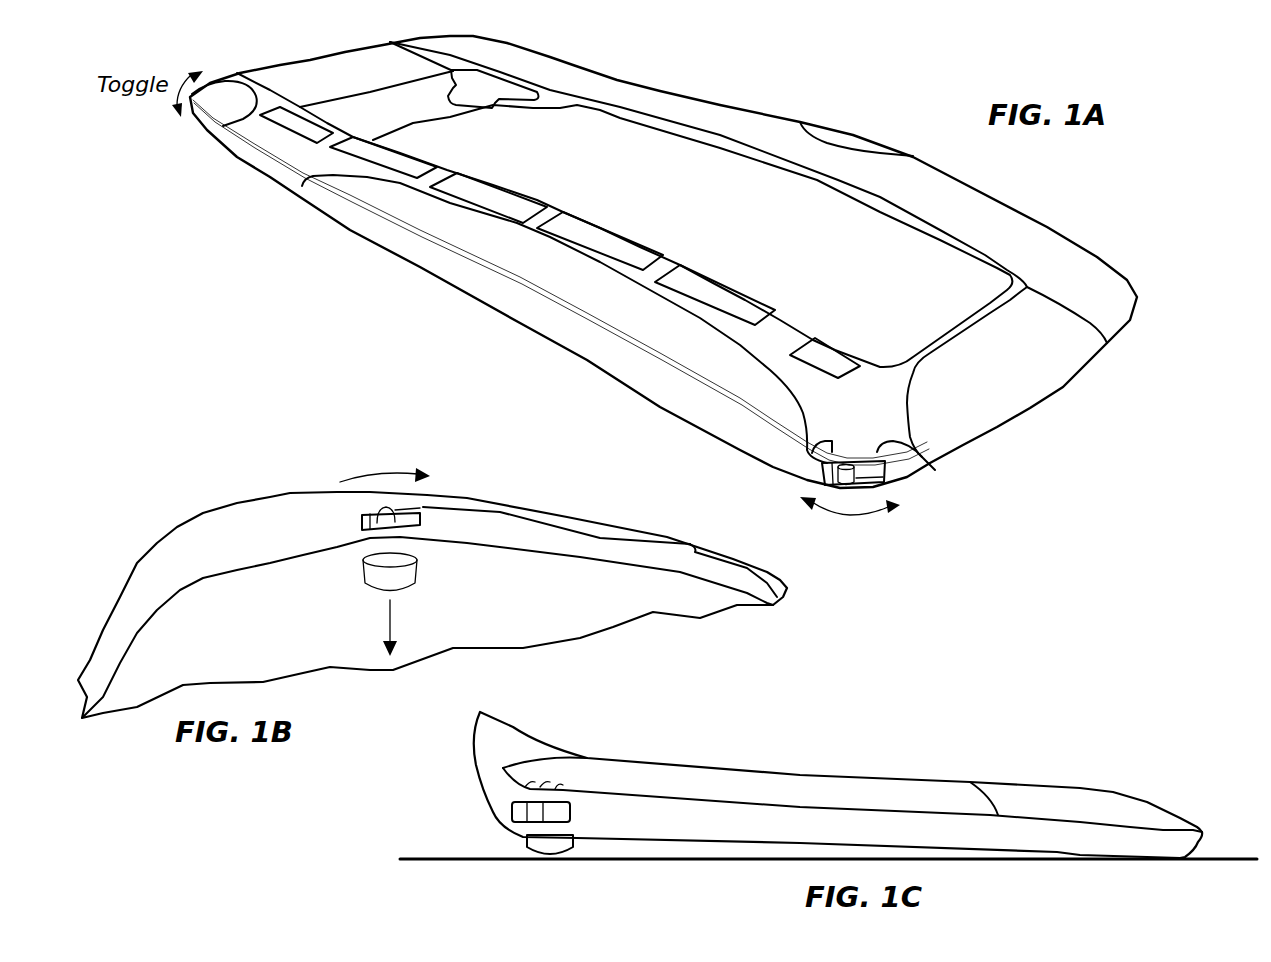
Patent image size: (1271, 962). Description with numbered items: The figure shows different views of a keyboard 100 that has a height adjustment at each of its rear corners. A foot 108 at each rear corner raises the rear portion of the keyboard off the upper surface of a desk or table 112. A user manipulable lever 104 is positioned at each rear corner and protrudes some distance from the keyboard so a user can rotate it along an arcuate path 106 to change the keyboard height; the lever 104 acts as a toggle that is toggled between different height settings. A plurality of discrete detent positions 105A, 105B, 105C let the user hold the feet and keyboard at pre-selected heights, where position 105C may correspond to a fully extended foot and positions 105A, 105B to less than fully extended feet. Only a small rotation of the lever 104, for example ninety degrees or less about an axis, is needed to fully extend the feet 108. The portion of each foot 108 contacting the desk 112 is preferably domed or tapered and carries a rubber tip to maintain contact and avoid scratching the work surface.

In FIG. 1A, the keyboard 100 is at (1068, 206).
In FIG. 1B, the keyboard 100 is at (198, 495).
In FIG. 1C, the keyboard 100 is at (1062, 756).
In FIG. 1A, the user manipulable lever 104 is at (810, 480).
In FIG. 1B, the user manipulable lever 104 is at (335, 526).
In FIG. 1C, the user manipulable lever 104 is at (496, 812).
In FIG. 1A, the position 105A is at (823, 442).
In FIG. 1A, the position 105B is at (857, 448).
In FIG. 1A, the position 105C is at (927, 457).
In FIG. 1A, the arcuate path 106 is at (853, 513).
In FIG. 1B, the foot 108 is at (417, 575).
In FIG. 1C, the foot 108 is at (510, 842).
In FIG. 1C, the desk or table 112 is at (460, 867).